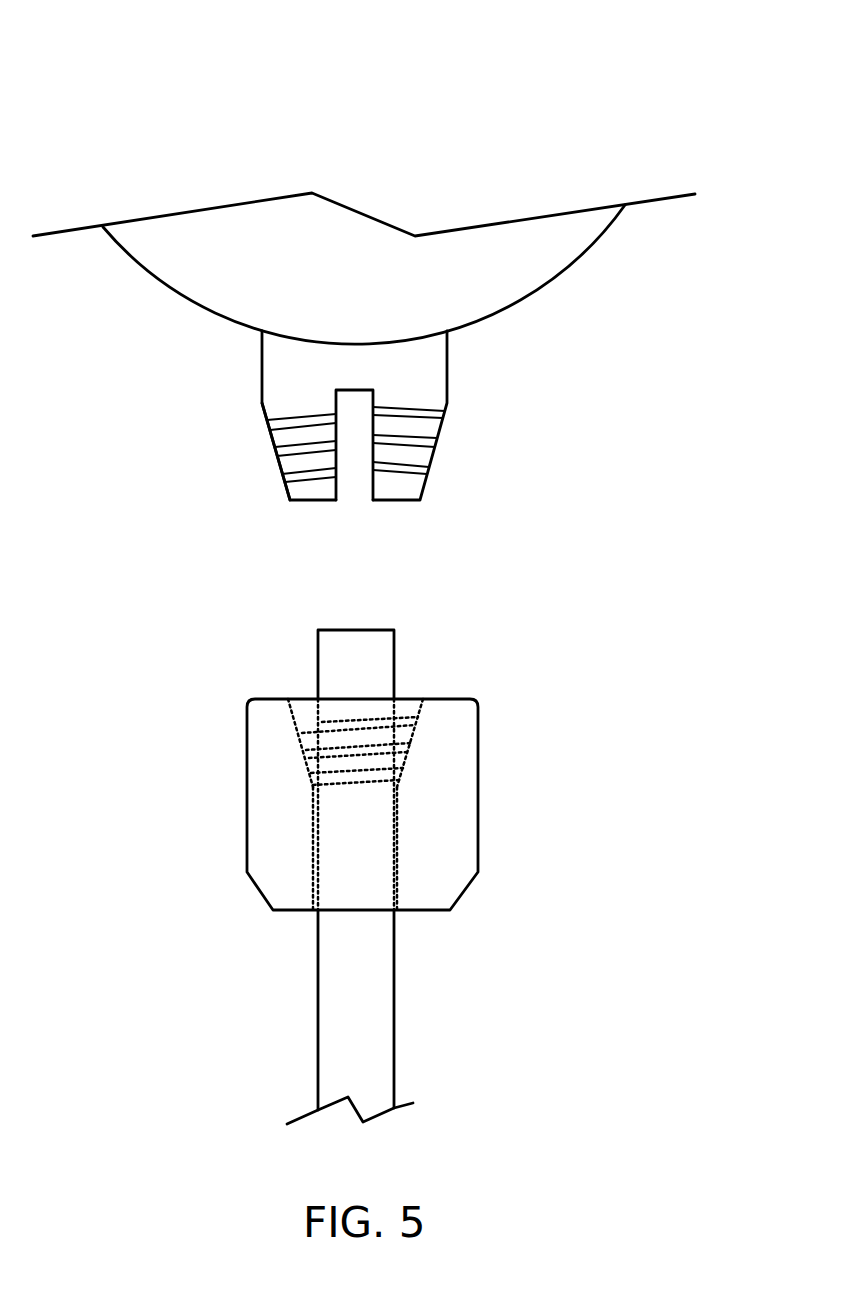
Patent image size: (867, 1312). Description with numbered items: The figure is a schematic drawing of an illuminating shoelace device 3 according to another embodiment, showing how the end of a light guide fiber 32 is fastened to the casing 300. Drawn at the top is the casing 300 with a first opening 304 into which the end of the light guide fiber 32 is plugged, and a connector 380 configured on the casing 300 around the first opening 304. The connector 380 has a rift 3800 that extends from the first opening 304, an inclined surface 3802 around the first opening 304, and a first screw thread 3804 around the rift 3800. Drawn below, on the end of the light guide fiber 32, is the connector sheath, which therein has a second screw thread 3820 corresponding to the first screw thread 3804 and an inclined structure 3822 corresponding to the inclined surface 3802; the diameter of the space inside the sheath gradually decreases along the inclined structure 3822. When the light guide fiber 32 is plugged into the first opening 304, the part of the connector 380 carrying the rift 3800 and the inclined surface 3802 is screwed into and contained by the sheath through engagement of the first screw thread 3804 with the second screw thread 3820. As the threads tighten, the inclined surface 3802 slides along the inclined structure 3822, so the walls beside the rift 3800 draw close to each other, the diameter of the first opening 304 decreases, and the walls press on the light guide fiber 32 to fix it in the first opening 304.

The illuminating shoelace device 3 is at (268, 78).
The casing 300 is at (210, 292).
The connector 380 is at (447, 353).
The first opening 304 is at (361, 512).
The rift 3800 is at (335, 406).
The inclined surface 3802 is at (278, 462).
The first screw thread 3804 is at (430, 438).
The light guide fiber 32 is at (318, 1018).
The second screw thread 3820 is at (313, 722).
The inclined structure 3822 is at (423, 699).